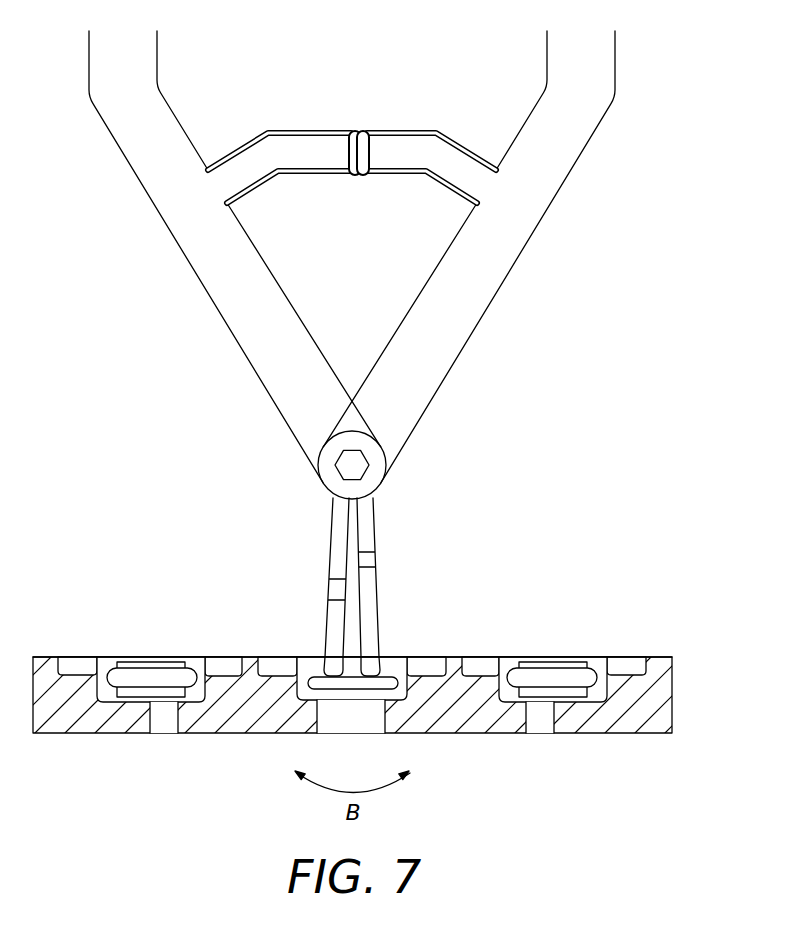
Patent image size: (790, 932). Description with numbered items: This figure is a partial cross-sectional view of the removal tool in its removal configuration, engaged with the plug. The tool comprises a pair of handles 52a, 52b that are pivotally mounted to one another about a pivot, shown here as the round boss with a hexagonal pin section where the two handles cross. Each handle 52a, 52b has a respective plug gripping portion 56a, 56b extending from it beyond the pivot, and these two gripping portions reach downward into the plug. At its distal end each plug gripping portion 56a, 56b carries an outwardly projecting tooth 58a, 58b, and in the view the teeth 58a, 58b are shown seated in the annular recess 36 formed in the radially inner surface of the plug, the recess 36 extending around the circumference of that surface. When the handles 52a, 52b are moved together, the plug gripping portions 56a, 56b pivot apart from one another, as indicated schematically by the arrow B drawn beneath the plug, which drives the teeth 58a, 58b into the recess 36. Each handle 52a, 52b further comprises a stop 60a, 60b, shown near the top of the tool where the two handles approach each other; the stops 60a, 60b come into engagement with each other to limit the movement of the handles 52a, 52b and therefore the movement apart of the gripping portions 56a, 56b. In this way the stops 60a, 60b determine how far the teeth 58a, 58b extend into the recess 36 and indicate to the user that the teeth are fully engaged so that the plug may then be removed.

The annular recess 36 is at (333, 690).
The handle 52a is at (487, 292).
The handle 52b is at (220, 292).
The plug gripping portion 56a is at (380, 607).
The plug gripping portion 56b is at (328, 607).
The tooth 58a is at (382, 653).
The tooth 58b is at (325, 653).
The stop 60a is at (394, 130).
The stop 60b is at (312, 130).